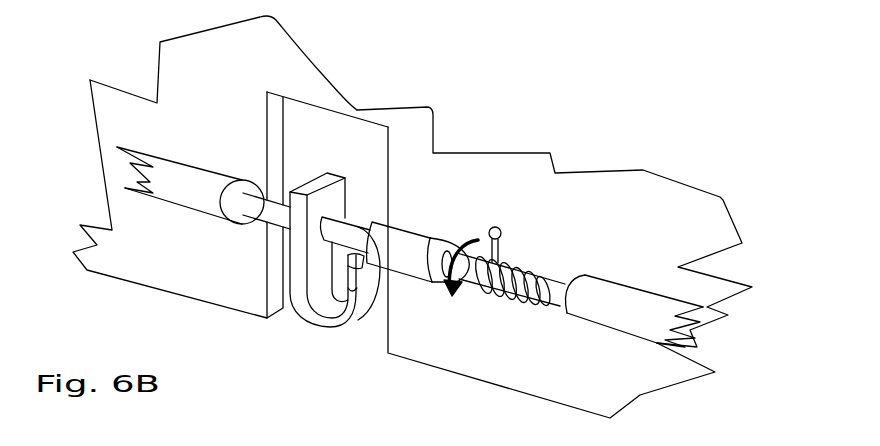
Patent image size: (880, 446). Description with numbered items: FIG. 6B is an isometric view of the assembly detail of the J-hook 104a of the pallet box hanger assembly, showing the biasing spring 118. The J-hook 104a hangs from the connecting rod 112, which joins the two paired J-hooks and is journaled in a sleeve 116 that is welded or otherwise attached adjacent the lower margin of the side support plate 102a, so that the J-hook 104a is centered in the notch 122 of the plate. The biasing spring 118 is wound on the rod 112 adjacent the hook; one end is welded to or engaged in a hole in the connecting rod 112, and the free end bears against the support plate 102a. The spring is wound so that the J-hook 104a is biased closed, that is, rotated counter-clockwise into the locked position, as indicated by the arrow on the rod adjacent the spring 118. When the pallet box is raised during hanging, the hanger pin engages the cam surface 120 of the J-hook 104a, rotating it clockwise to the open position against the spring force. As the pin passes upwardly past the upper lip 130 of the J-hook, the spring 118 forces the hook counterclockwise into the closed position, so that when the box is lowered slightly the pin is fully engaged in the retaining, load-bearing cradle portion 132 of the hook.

The side support plate 102a is at (215, 275).
The J-hook 104a is at (315, 300).
The connecting rod 112 is at (358, 224).
The sleeve 116 is at (207, 173).
The biasing spring 118 is at (498, 231).
The cam surface 120 is at (366, 318).
The notch 122 is at (270, 143).
The upper lip 130 is at (370, 218).
The cradle portion 132 is at (351, 292).